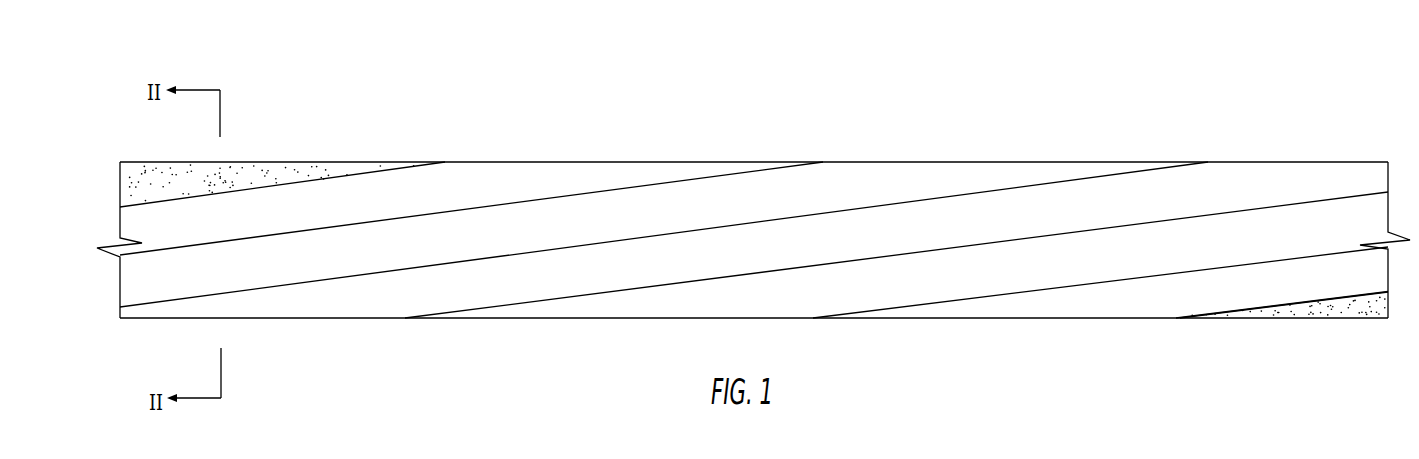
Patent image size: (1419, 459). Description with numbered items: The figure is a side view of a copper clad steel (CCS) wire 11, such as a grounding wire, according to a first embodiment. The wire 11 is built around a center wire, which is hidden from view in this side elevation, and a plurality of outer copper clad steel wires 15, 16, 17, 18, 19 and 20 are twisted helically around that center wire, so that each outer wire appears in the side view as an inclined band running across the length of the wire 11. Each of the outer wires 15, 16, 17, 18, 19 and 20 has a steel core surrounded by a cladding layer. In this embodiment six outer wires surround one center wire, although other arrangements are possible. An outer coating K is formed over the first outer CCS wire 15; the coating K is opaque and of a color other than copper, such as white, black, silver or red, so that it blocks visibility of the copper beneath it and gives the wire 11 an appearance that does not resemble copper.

The wire 11 is at (917, 134).
The first outer copper clad steel wire 15 is at (240, 164).
The outer coating K is at (270, 173).
The outer copper clad steel wire 16 is at (445, 186).
The outer copper clad steel wire 17 is at (653, 214).
The outer copper clad steel wire 18 is at (775, 251).
The outer copper clad steel wire 19 is at (888, 292).
The outer copper clad steel wire 20 is at (1168, 297).